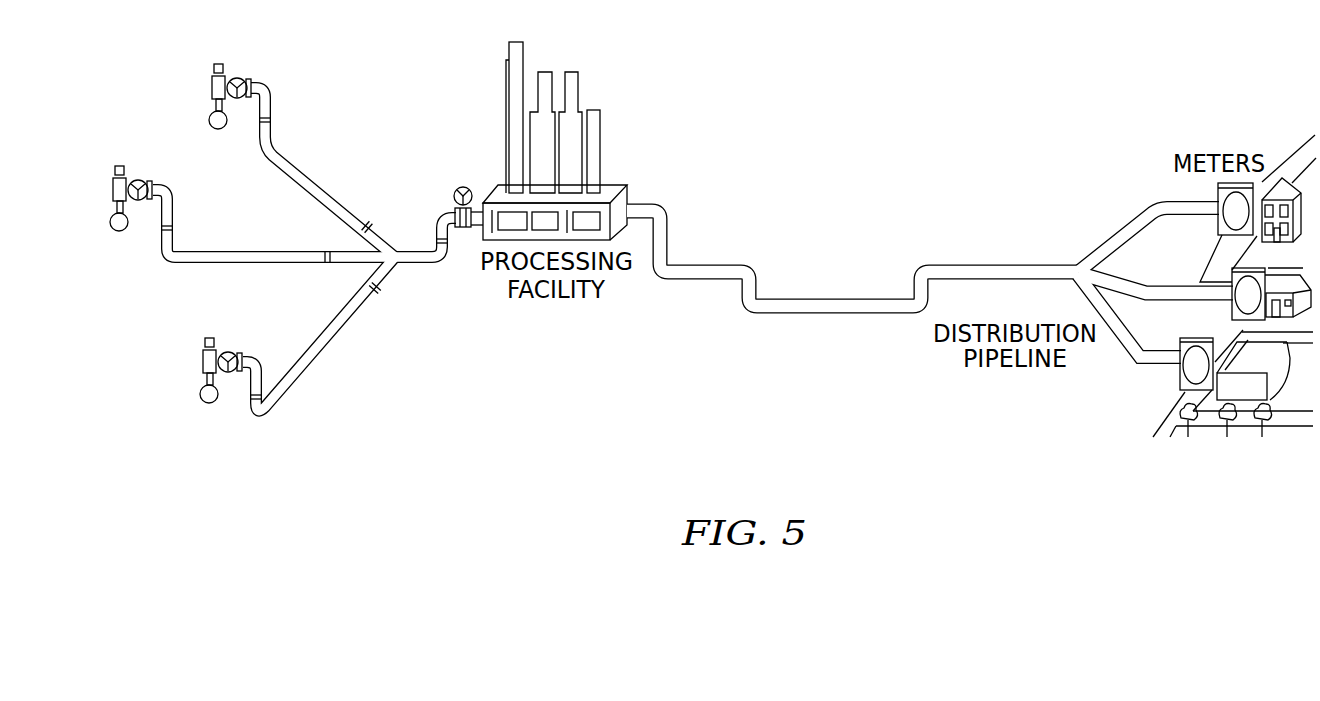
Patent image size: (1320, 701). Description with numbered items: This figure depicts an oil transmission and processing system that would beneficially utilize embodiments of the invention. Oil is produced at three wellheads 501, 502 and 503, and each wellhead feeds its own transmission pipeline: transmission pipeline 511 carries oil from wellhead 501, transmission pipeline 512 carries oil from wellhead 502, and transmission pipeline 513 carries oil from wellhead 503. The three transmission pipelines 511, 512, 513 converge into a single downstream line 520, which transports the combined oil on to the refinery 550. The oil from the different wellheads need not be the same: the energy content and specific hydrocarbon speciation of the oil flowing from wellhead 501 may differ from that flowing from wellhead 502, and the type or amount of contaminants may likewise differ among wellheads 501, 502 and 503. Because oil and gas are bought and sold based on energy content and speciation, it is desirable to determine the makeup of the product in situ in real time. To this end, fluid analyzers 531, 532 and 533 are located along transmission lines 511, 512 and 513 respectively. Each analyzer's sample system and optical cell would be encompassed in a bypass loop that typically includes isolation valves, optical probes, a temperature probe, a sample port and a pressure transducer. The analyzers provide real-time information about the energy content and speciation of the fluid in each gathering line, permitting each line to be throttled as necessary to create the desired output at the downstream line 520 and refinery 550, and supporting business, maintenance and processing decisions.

The wellhead 501 is at (211, 87).
The wellhead 502 is at (114, 190).
The wellhead 503 is at (204, 362).
The transmission pipeline 511 is at (281, 149).
The transmission pipeline 512 is at (205, 251).
The transmission pipeline 513 is at (302, 399).
The downstream line 520 is at (435, 263).
The fluid analyzer 531 is at (371, 221).
The fluid analyzer 532 is at (325, 250).
The fluid analyzer 533 is at (379, 294).
The refinery 550 is at (606, 84).